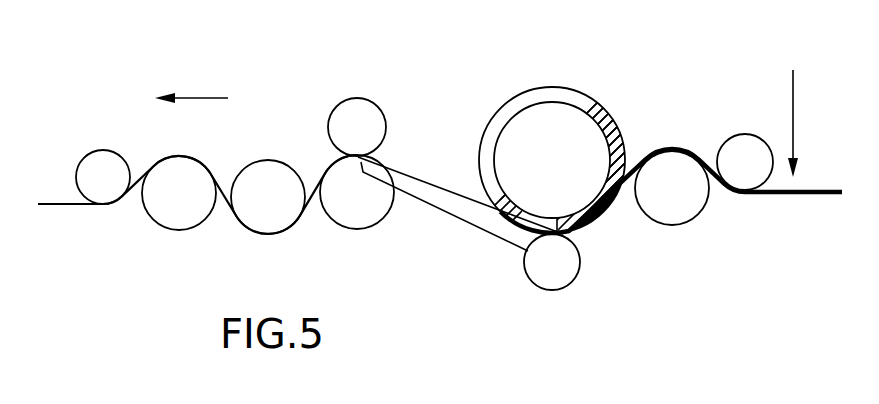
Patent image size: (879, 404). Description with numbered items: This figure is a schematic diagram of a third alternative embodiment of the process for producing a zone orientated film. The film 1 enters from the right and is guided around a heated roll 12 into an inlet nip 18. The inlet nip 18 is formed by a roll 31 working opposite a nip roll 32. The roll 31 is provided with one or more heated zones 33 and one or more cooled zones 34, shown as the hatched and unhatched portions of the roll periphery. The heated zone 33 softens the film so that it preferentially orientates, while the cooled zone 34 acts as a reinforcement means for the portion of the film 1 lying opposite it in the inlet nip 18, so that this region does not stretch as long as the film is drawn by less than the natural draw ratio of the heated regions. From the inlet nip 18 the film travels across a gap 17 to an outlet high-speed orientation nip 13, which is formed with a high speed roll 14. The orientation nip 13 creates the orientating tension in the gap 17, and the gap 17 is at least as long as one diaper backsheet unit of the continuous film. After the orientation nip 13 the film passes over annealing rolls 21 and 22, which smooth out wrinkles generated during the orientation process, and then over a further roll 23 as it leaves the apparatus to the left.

The film 1 is at (42, 188).
The heated roll 12 is at (698, 205).
The orientation nip 13 is at (400, 78).
The high speed roll 14 is at (357, 224).
The gap 17 is at (460, 204).
The inlet nip 18 is at (639, 150).
The annealing roll 21 is at (262, 160).
The annealing roll 22 is at (157, 213).
The roller 23 is at (100, 155).
The roll 31 is at (587, 227).
The nip roll 32 is at (570, 278).
The heated zone 33 is at (515, 108).
The cooled zone 34 is at (528, 222).